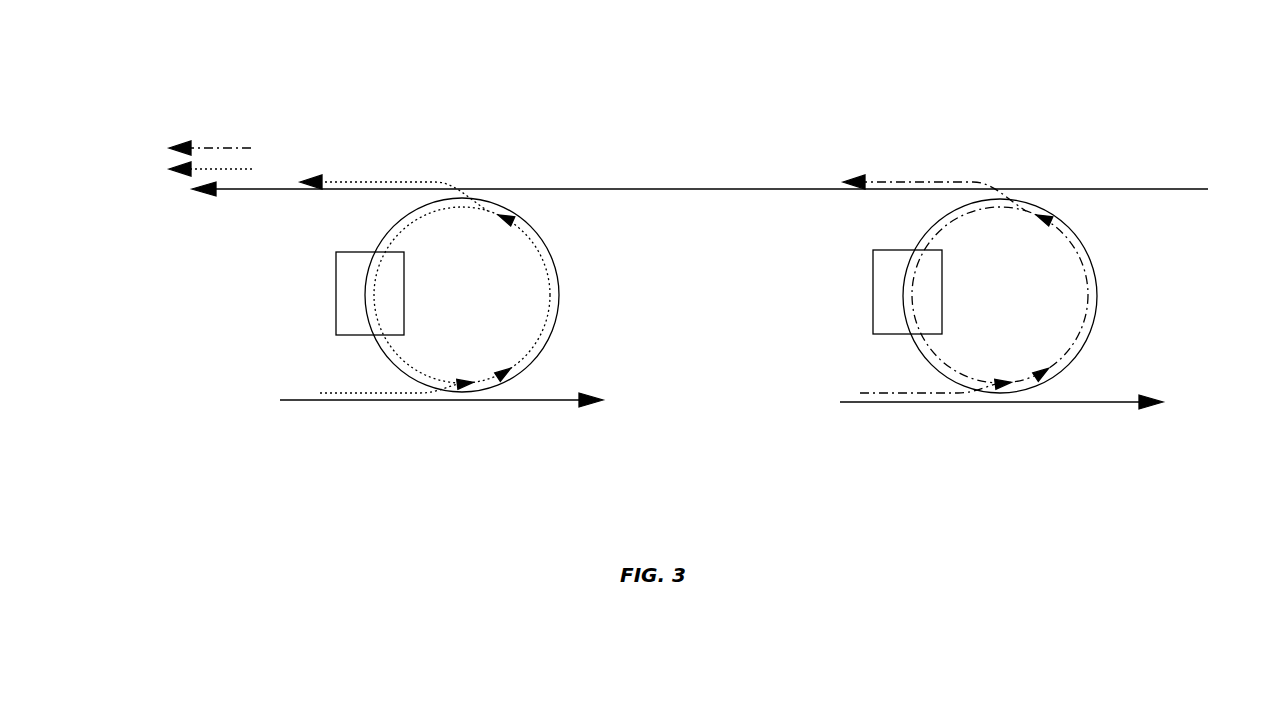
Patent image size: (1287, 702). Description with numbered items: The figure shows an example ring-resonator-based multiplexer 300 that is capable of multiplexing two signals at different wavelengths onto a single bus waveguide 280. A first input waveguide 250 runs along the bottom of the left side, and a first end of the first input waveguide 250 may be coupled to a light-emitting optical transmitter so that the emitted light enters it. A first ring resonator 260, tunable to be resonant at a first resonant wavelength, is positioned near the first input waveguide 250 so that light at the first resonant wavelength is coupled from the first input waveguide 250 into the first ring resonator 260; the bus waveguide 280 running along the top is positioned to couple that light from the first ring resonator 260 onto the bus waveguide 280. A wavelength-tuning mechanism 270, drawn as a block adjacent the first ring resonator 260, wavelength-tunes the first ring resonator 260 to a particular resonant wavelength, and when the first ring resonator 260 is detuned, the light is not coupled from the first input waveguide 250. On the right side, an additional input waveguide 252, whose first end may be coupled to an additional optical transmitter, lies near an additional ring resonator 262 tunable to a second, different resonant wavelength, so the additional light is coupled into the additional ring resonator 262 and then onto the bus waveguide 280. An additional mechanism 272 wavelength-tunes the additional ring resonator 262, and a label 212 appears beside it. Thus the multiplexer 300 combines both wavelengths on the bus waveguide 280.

The ring-resonator-based multiplexer 300 is at (258, 74).
The bus waveguide 280 is at (1175, 190).
The first ring resonator 260 is at (560, 283).
The additional ring resonator 262 is at (1098, 283).
The wavelength-tuning mechanism 270 is at (336, 303).
The additional mechanism 272 is at (873, 303).
The print station 212 is at (868, 292).
The first input waveguide 250 is at (545, 400).
The additional input waveguide 252 is at (1103, 402).